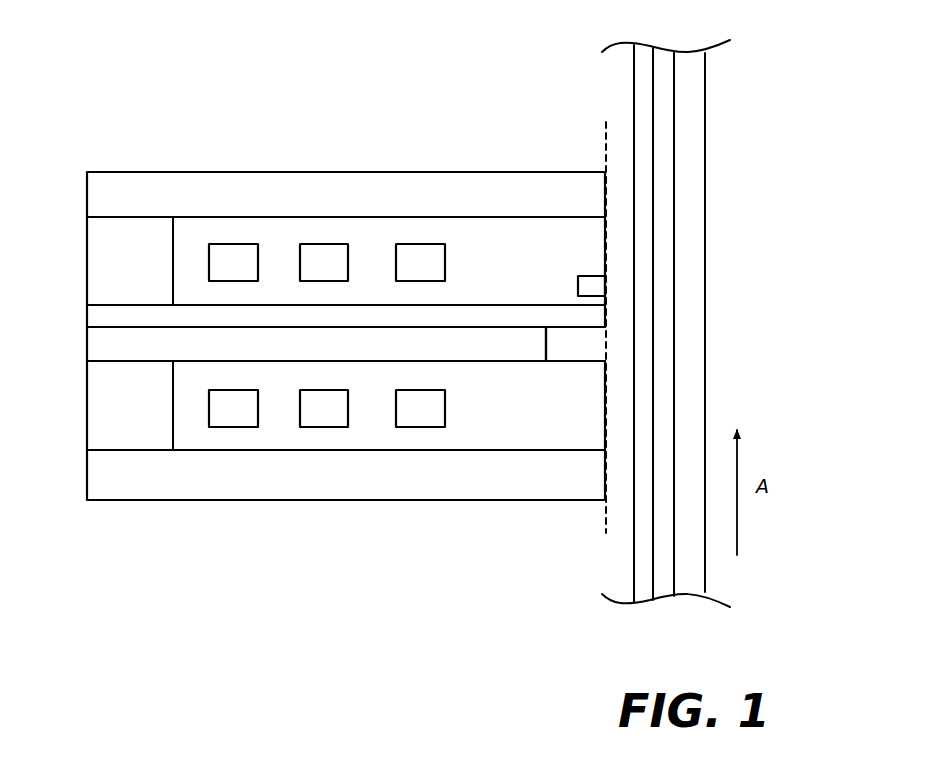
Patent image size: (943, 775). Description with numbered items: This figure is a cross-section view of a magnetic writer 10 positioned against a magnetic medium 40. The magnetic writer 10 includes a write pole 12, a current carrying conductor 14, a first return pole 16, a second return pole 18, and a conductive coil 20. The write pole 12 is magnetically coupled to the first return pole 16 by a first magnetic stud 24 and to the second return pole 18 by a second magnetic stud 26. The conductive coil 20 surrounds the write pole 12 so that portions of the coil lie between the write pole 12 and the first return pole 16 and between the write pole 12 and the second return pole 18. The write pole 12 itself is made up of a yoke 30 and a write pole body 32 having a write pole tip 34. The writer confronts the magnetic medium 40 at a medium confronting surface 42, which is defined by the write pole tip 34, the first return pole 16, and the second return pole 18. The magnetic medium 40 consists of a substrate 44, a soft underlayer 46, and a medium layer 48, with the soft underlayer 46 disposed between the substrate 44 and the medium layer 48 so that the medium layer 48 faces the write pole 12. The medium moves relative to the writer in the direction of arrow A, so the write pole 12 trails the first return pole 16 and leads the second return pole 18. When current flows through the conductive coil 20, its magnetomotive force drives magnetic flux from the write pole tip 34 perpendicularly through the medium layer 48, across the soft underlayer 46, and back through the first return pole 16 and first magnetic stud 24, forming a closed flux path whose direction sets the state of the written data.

The magnetic writer 10 is at (160, 133).
The write pole 12 is at (72, 327).
The current carrying conductor 14 is at (588, 270).
The first return pole 16 is at (95, 473).
The second return pole 18 is at (97, 196).
The conductive coil 20 is at (456, 246).
The first magnetic stud 24 is at (95, 423).
The second magnetic stud 26 is at (100, 253).
The yoke 30 is at (92, 347).
The write pole body 32 is at (92, 310).
The write pole tip 34 is at (580, 318).
The magnetic medium 40 is at (744, 92).
The medium confronting surface 42 is at (598, 145).
The substrate 44 is at (692, 218).
The soft underlayer 46 is at (662, 250).
The medium layer 48 is at (642, 297).